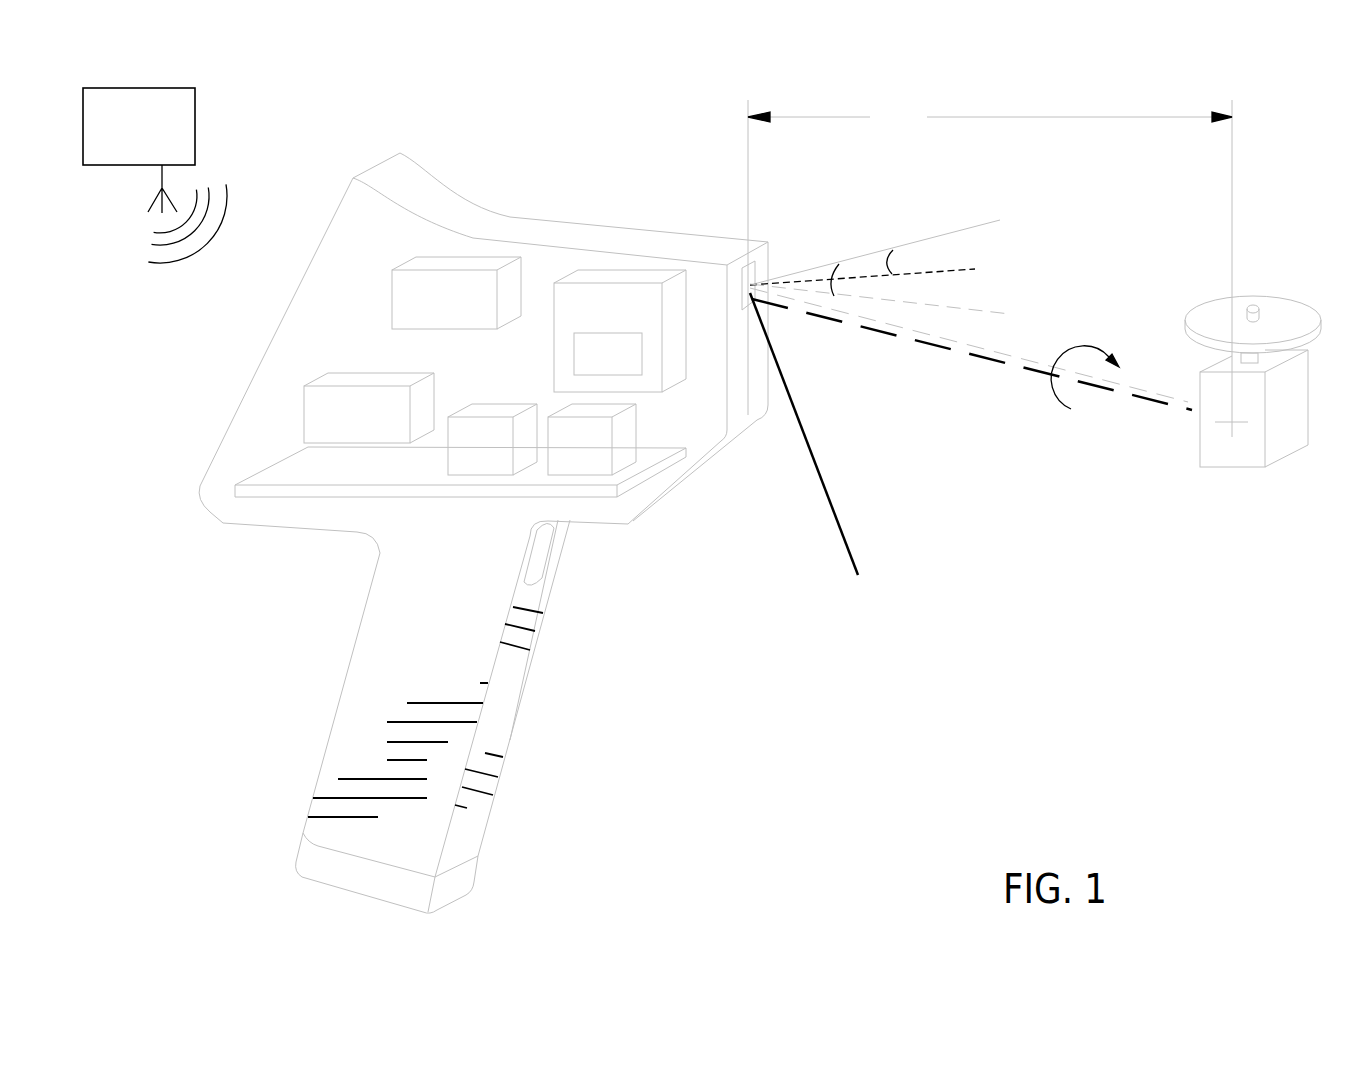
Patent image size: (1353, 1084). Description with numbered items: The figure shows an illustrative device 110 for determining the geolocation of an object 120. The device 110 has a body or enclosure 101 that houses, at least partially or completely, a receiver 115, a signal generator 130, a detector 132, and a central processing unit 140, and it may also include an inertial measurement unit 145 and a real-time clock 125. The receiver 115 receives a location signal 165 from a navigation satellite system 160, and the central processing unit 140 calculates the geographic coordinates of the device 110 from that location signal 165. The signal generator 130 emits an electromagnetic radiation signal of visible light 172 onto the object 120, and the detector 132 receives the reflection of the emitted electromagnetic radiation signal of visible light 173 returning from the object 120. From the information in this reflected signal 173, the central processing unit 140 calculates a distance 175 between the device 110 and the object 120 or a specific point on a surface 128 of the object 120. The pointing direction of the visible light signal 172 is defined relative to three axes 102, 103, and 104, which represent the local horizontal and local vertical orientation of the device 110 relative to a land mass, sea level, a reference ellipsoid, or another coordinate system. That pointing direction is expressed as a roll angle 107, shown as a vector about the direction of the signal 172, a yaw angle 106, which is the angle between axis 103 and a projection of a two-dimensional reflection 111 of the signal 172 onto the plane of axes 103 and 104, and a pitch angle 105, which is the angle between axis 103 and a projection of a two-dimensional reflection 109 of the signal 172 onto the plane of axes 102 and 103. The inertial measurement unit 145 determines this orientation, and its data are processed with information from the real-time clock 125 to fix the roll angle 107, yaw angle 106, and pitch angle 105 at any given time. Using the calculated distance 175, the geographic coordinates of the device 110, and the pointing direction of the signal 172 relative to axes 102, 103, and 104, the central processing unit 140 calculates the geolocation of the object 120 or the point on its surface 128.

The body or enclosure 101 is at (497, 215).
The axis 102 is at (748, 110).
The axis 103 is at (977, 227).
The axis 104 is at (846, 547).
The pitch angle 105 is at (893, 252).
The yaw angle 106 is at (839, 266).
The roll angle 107 is at (1062, 401).
The two-dimensional reflection 109 is at (950, 270).
The device 110 is at (360, 146).
The two-dimensional reflection 111 is at (975, 308).
The receiver 115 is at (429, 311).
The object 120 is at (1297, 298).
The real-time clock 125 is at (464, 454).
The surface 128 is at (1190, 410).
The signal generator 130 is at (592, 317).
The detector 132 is at (592, 366).
The central processing unit 140 is at (564, 454).
The inertial measurement unit 145 is at (342, 427).
The navigation satellite system 160 is at (122, 136).
The location signal 165 is at (178, 261).
The electromagnetic radiation signal of visible light 172 is at (1137, 396).
The reflection of the emitted electromagnetic radiation signal of visible light 173 is at (885, 333).
The distance 175 is at (990, 268).